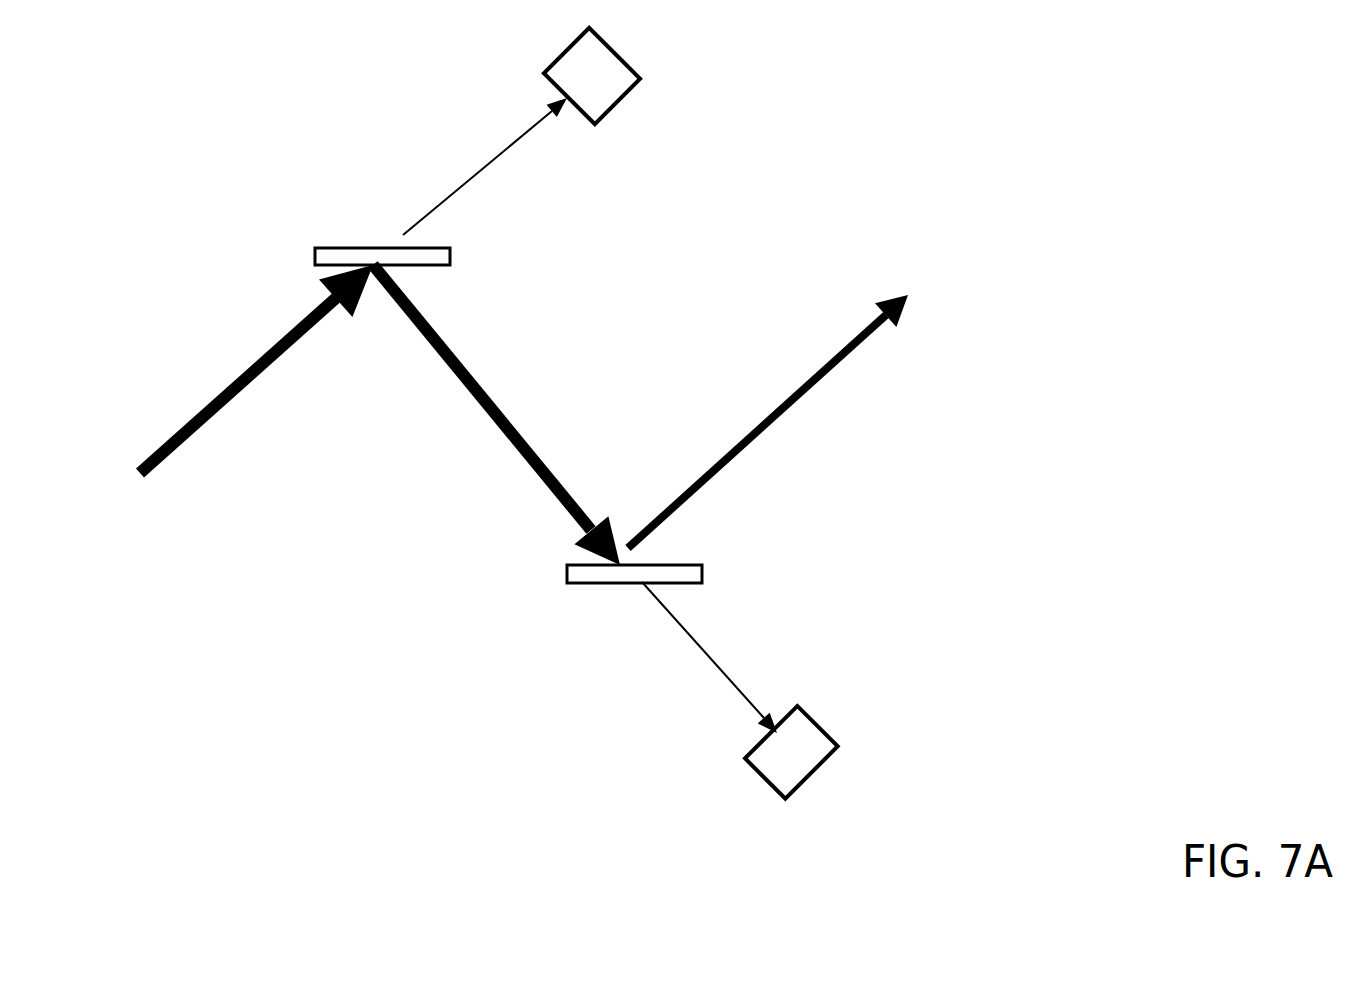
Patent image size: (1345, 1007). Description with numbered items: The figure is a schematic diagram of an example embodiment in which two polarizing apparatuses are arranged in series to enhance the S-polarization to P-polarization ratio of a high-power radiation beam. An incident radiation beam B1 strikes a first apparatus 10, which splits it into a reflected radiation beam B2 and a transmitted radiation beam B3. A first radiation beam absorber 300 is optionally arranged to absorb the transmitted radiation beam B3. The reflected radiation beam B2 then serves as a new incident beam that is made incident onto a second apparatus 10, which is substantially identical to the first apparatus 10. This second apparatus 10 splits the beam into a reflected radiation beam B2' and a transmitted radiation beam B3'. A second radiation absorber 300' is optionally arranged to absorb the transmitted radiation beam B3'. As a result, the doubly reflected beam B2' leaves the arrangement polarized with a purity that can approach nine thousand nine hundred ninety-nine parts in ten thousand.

The polarizing apparatus 10 is at (327, 248).
The first radiation beam absorber 300 is at (649, 63).
The second radiation absorber 300' is at (850, 742).
The radiation beam B1 is at (195, 417).
The reflected radiation beam B2 is at (447, 415).
The reflected radiation beam B2' is at (768, 396).
The transmitted radiation beam B3 is at (458, 163).
The transmitted radiation beam B3' is at (689, 694).